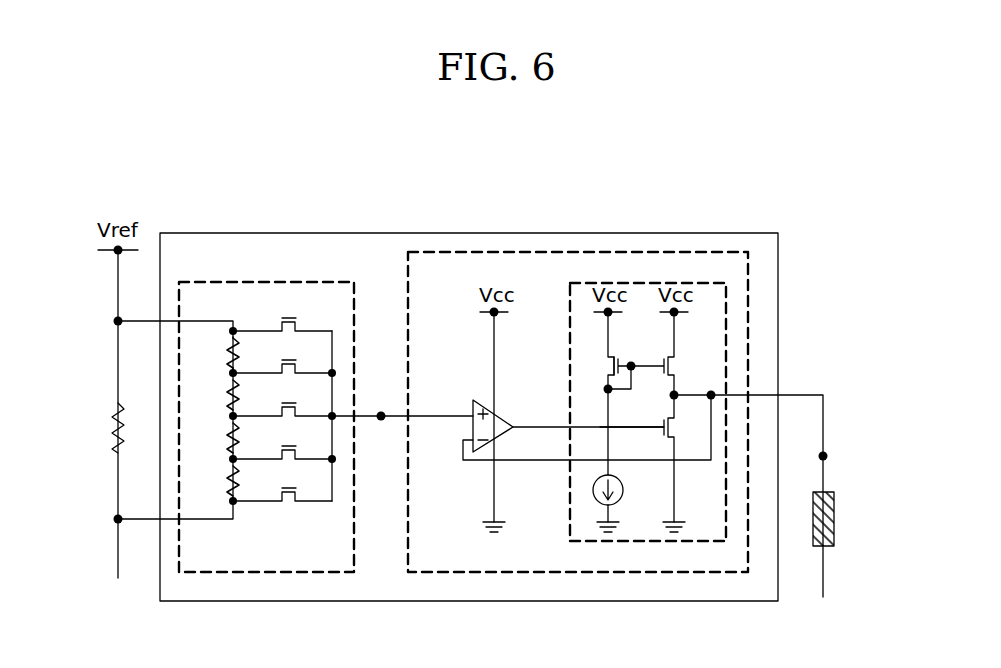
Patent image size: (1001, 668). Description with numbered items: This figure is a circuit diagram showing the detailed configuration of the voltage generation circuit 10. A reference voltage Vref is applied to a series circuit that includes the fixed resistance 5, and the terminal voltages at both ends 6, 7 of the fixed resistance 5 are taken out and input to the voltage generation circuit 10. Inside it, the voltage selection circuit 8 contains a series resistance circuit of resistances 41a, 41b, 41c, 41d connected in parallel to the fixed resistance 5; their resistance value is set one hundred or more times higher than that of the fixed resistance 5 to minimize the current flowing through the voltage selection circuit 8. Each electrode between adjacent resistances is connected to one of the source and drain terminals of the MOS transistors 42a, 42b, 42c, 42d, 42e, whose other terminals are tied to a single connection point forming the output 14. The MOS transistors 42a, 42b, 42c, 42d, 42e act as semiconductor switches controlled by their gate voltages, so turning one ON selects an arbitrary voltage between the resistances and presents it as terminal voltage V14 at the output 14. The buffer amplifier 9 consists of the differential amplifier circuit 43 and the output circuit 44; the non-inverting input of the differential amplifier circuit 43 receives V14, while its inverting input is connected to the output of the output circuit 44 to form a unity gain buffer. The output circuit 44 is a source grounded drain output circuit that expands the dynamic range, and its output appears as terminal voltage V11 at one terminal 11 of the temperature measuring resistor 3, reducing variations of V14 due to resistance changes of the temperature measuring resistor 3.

The voltage generation circuit 10 is at (213, 233).
The voltage selection circuit 8 is at (318, 282).
The buffer amplifier 9 is at (618, 252).
The output circuit 44 is at (705, 283).
The end of the fixed resistance 6 is at (118, 321).
The fixed resistance 5 is at (112, 432).
The end of the fixed resistance 7 is at (118, 519).
The resistance 41a is at (227, 360).
The resistance 41b is at (227, 402).
The resistance 41c is at (227, 445).
The resistance 41d is at (227, 488).
The MOS transistor 42a is at (283, 322).
The MOS transistor 42b is at (283, 364).
The MOS transistor 42c is at (283, 407).
The MOS transistor 42d is at (283, 450).
The MOS transistor 42e is at (283, 492).
The output 14 is at (381, 416).
The differential amplifier circuit 43 is at (513, 418).
The terminal 11 is at (823, 456).
The temperature measuring resistor 3 is at (834, 515).